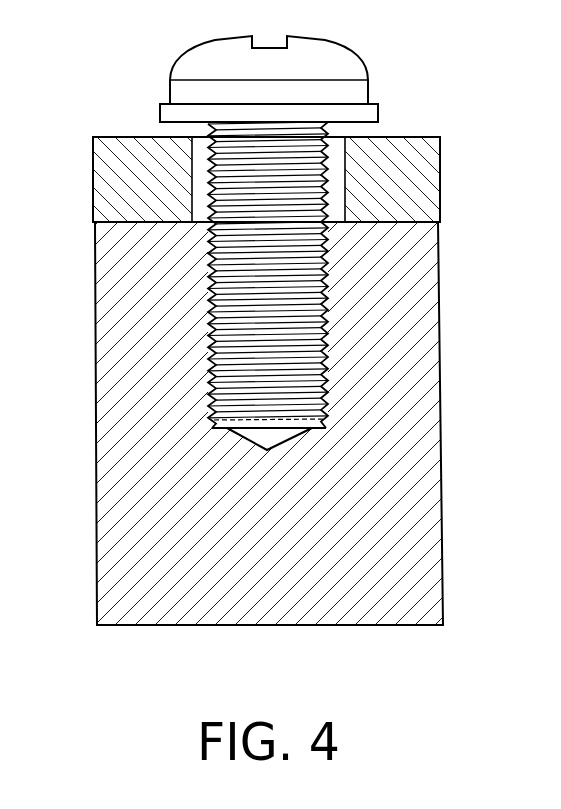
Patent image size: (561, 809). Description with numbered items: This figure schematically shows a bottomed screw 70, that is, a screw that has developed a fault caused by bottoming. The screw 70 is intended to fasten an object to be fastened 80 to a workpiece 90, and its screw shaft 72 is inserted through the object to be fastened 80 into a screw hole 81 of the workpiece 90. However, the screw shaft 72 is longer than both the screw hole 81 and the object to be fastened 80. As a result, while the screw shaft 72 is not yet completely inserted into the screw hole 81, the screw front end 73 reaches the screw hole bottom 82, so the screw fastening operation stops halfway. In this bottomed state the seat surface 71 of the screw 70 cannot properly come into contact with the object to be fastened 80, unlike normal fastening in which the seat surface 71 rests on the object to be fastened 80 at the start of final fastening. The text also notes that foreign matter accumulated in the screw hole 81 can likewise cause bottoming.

The screw 70 is at (299, 245).
The seat surface 71 is at (167, 122).
The screw shaft 72 is at (297, 290).
The screw front end 73 is at (305, 428).
The object to be fastened 80 is at (430, 184).
The screw hole 81 is at (310, 340).
The screw hole bottom 82 is at (232, 433).
The workpiece 90 is at (432, 547).